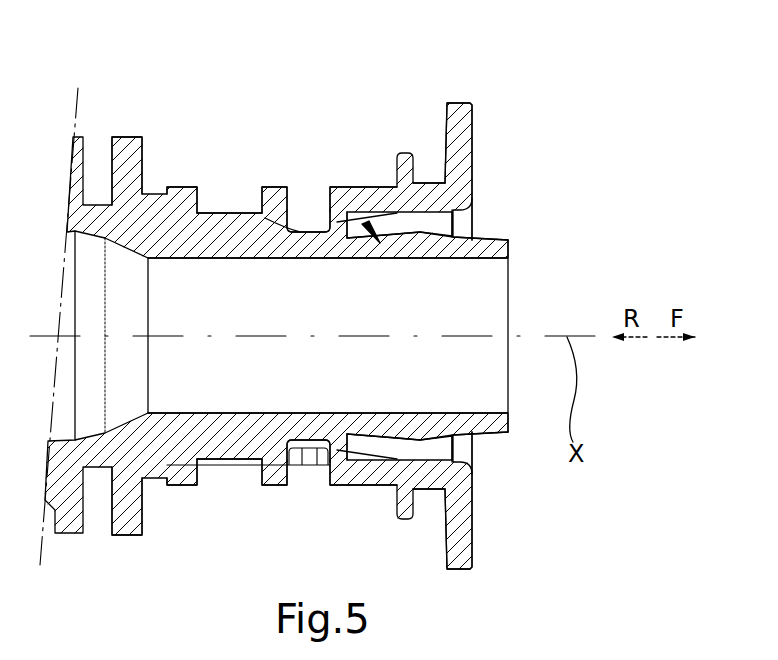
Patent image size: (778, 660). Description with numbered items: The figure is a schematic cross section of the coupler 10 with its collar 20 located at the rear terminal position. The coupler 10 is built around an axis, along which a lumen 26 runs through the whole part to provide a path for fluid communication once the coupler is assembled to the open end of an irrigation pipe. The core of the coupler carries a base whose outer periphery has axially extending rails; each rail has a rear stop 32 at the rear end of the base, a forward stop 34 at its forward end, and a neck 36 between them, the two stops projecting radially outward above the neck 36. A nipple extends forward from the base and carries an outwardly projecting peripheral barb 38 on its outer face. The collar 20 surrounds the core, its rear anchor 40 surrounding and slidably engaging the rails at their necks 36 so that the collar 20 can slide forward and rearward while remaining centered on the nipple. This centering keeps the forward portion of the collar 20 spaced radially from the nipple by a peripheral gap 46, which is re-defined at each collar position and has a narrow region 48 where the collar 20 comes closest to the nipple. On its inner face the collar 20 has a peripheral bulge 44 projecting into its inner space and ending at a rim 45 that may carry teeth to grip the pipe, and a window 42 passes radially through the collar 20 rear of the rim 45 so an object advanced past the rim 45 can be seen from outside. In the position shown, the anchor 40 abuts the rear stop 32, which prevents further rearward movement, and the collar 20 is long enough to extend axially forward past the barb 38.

The coupler 10 is at (498, 110).
The collar 20 is at (405, 118).
The lumen 26 is at (470, 302).
The rear stop 32 is at (155, 190).
The forward stop 34 is at (255, 212).
The neck 36 is at (212, 212).
The barb 38 is at (403, 222).
The rear anchor 40 is at (177, 187).
The window 42 is at (316, 492).
The peripheral bulge 44 is at (400, 222).
The rim 45 is at (322, 232).
The peripheral gap 46 is at (462, 222).
The narrow region 48 is at (424, 233).